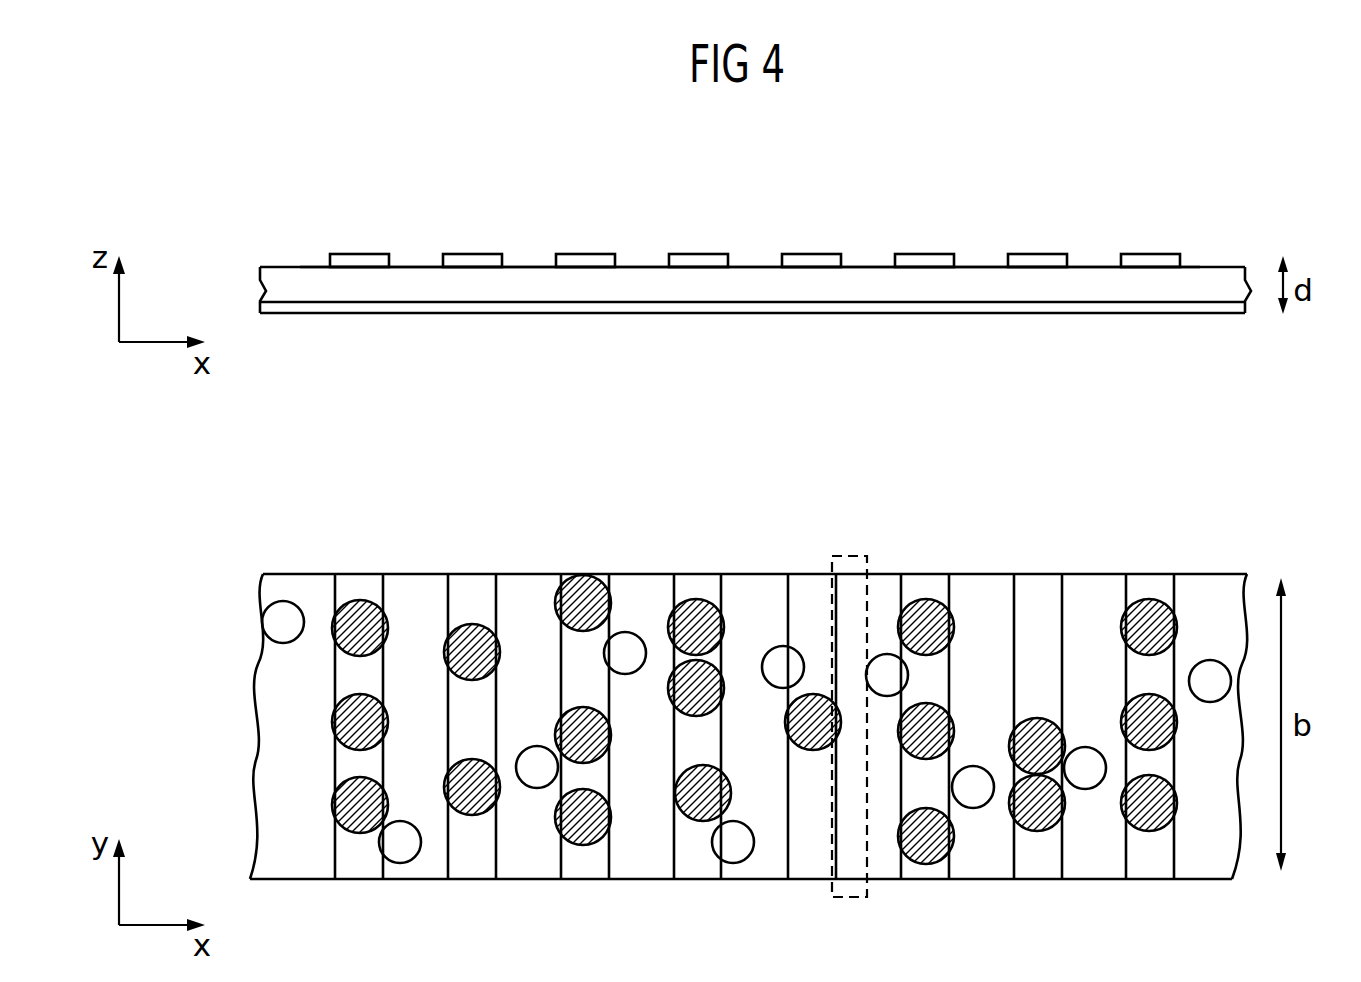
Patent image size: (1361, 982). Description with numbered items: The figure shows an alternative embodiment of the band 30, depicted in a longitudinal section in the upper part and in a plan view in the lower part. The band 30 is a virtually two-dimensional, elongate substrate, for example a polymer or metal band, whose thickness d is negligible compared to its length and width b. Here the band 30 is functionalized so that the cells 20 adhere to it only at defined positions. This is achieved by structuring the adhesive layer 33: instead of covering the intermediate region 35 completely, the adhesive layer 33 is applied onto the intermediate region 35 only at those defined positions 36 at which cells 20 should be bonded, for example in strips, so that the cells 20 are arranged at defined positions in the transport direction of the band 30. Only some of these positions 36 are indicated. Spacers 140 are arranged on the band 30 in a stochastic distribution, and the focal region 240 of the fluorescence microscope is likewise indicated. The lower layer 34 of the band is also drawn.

The cells 20 is at (357, 612).
The band 30 is at (1150, 186).
The adhesive layer 33 is at (755, 568).
The carrier layer 34 is at (490, 314).
The intermediate region 35 is at (602, 291).
The defined positions 36 is at (688, 258).
The spacers 140 is at (276, 624).
The focal region 240 is at (850, 552).